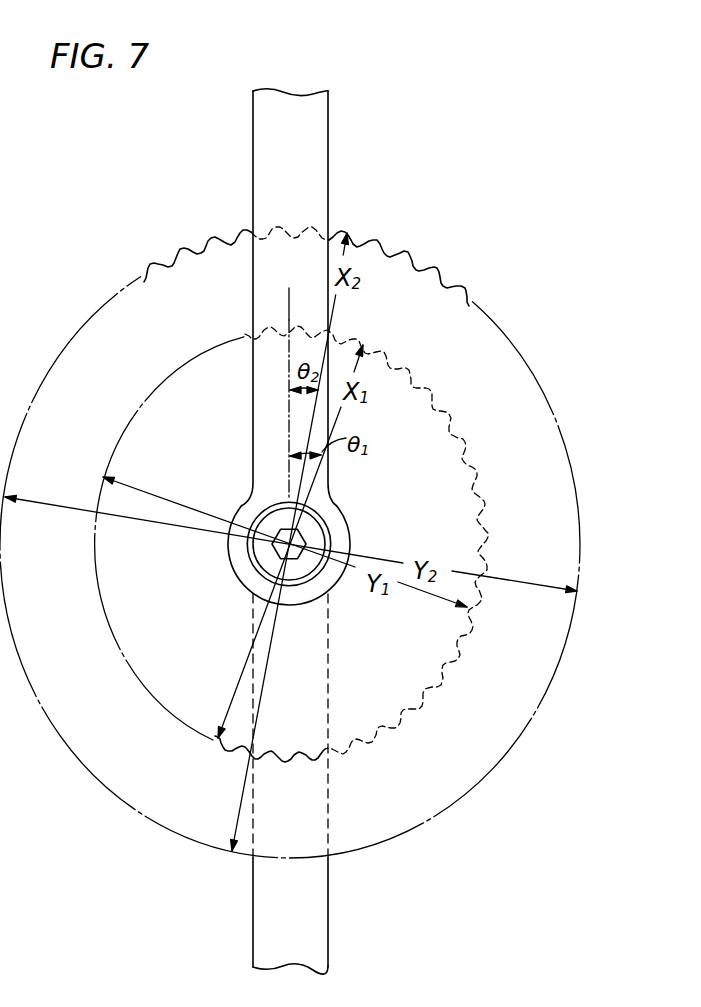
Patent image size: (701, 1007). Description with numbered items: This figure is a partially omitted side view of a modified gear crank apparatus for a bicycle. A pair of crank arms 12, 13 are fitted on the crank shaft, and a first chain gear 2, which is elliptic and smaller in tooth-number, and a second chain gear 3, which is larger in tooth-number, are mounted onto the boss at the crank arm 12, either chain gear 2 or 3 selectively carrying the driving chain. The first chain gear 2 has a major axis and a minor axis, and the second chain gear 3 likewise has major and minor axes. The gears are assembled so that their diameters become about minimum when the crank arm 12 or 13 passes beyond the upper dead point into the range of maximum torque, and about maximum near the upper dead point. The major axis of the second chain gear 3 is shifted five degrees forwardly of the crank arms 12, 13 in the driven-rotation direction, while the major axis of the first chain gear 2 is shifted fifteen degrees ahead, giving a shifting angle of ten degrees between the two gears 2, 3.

The first chain gear 2 is at (417, 418).
The second chain gear 3 is at (542, 440).
The crank arm 12 is at (310, 146).
The crank arm 13 is at (312, 915).